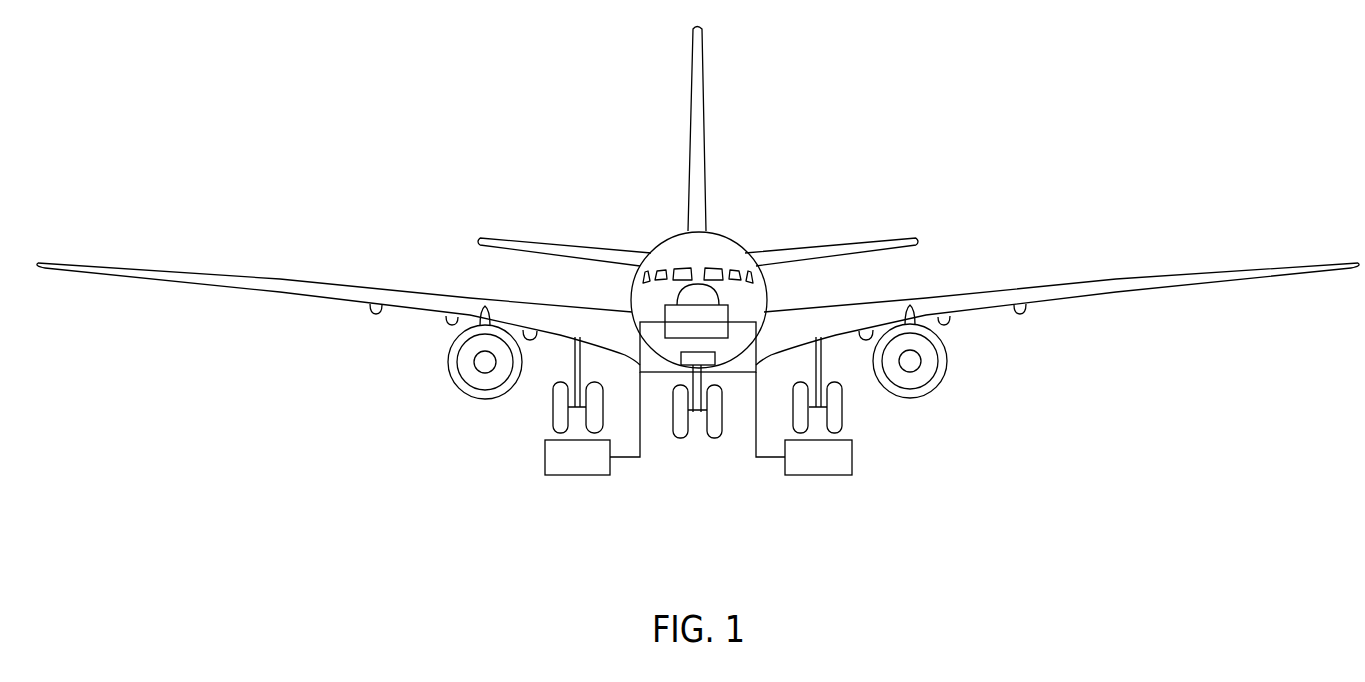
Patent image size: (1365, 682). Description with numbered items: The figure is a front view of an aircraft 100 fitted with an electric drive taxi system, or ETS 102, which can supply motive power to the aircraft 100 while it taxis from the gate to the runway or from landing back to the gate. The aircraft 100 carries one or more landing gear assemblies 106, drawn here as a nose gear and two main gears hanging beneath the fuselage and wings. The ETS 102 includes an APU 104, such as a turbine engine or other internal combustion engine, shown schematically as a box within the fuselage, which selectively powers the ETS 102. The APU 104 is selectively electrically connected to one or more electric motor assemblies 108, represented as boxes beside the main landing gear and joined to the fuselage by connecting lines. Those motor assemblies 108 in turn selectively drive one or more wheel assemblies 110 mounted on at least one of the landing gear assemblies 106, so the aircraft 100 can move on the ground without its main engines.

The aircraft 100 is at (882, 174).
The ETS 102 is at (703, 423).
The APU 104 is at (718, 332).
The landing gear assembly 106 is at (575, 372).
The electric motor assembly 108 is at (642, 472).
The wheel assembly 110 is at (553, 418).